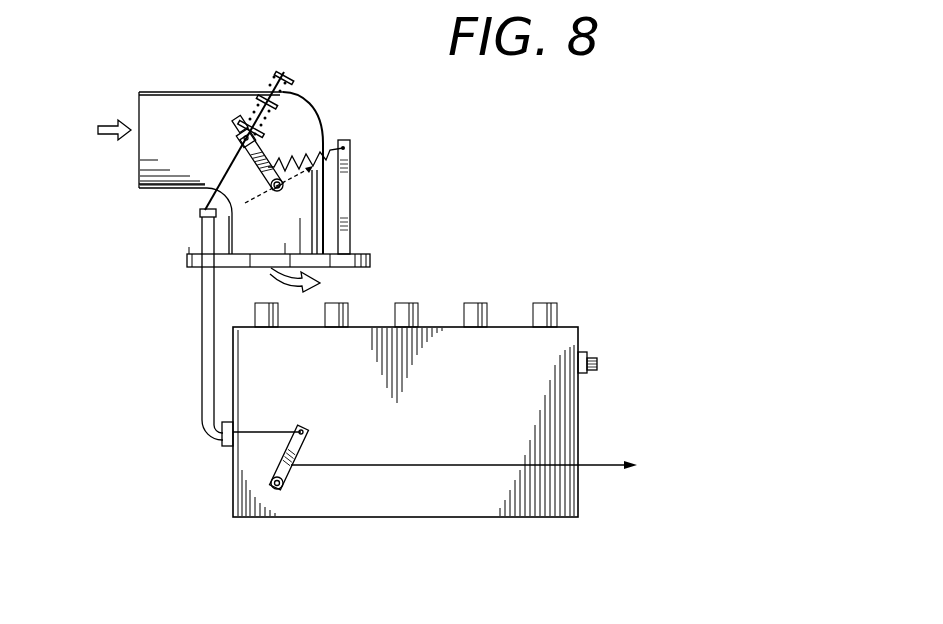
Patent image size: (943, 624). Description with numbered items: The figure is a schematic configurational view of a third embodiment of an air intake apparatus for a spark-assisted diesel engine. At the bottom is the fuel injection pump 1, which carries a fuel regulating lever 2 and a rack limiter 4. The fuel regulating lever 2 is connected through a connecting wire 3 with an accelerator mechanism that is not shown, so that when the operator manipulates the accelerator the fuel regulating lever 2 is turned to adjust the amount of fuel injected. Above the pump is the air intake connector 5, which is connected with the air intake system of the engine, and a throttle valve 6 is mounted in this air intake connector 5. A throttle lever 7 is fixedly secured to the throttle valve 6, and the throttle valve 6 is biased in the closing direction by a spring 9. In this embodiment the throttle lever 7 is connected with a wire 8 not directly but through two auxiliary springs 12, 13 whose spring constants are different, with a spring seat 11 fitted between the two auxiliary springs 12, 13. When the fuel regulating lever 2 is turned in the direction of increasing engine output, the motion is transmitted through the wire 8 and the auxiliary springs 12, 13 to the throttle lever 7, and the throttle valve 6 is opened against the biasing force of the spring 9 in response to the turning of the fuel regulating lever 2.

The fuel injection pump 1 is at (365, 508).
The fuel regulating lever 2 is at (288, 452).
The connecting wire 3 is at (380, 464).
The rack limiter 4 is at (587, 352).
The air intake connector 5 is at (177, 102).
The throttle valve 6 is at (268, 194).
The throttle lever 7 is at (266, 169).
The wire 8 is at (222, 178).
The spring 9 is at (311, 157).
The spring seat 11 is at (306, 101).
The auxiliary spring 12 is at (277, 75).
The auxiliary spring 13 is at (253, 110).